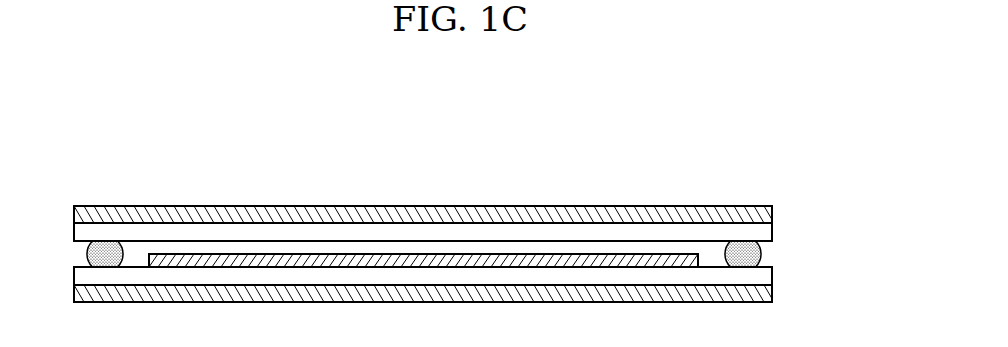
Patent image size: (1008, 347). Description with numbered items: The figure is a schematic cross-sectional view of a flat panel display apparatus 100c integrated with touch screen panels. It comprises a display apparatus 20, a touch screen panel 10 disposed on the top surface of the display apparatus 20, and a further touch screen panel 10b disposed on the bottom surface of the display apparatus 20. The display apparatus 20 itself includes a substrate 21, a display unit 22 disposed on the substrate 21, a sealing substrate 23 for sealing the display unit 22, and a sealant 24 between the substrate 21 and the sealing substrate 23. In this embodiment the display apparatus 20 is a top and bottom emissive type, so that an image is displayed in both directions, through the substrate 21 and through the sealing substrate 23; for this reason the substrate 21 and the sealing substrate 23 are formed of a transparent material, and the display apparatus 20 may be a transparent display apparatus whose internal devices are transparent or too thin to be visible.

The flat panel display apparatus integrated touch screen panel 100c is at (772, 96).
The touch screen panel 10 is at (760, 210).
The touch screen panel 10b is at (760, 298).
The display apparatus 20 is at (597, 152).
The substrate 21 is at (600, 275).
The display unit 22 is at (648, 258).
The sealing substrate 23 is at (703, 232).
The sealant 24 is at (745, 243).